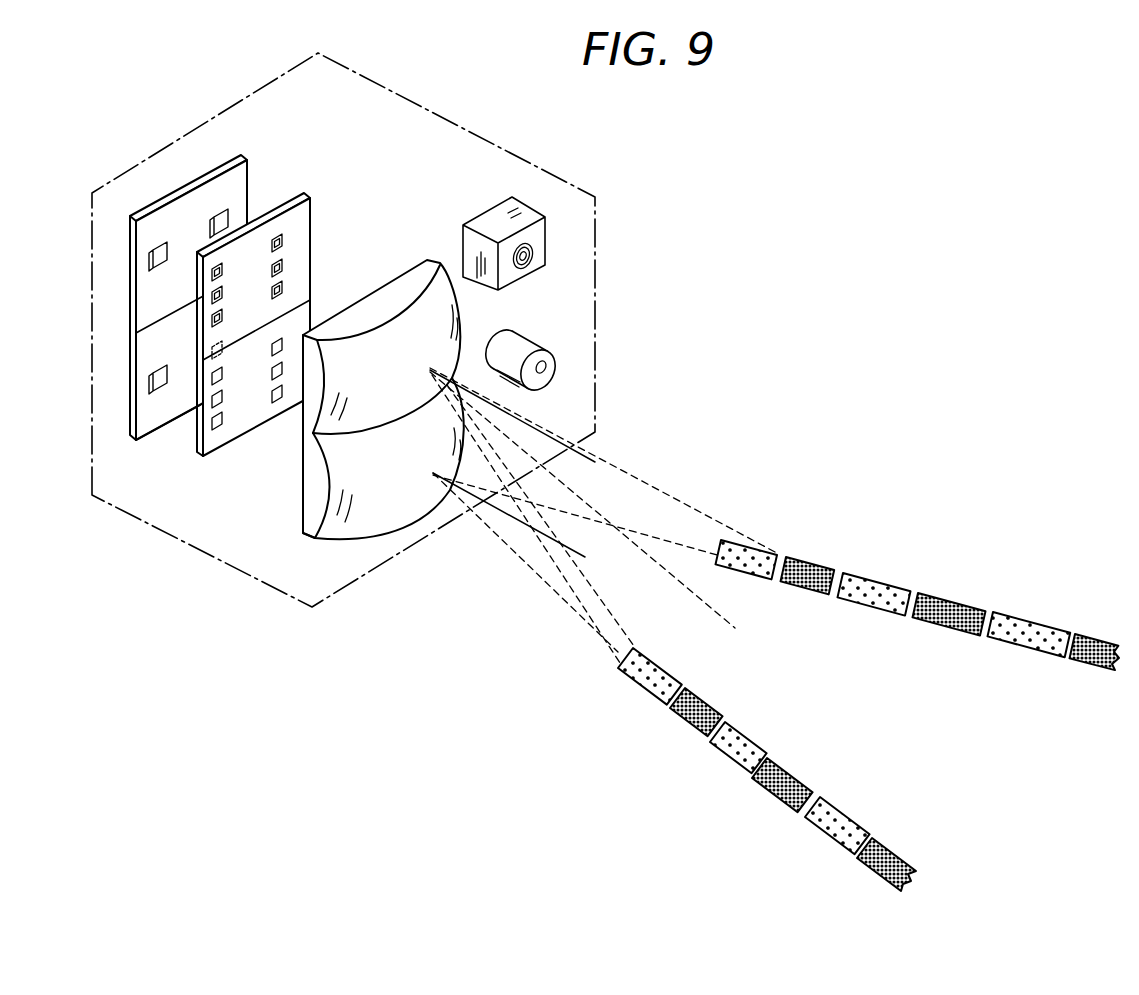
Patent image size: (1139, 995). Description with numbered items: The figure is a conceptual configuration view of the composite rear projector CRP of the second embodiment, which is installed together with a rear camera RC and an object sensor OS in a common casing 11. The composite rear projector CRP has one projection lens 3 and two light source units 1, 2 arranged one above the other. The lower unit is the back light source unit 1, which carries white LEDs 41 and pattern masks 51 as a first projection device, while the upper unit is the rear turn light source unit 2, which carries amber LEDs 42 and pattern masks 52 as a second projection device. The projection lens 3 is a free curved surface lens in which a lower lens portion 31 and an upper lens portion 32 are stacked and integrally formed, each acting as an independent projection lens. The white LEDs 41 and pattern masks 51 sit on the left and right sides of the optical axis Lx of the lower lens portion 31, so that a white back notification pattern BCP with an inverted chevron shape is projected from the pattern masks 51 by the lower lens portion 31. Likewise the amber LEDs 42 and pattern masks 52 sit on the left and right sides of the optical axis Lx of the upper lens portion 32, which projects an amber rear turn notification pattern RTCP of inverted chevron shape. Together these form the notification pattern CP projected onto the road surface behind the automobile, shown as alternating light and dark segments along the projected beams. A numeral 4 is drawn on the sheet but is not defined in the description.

The back light source unit 1 is at (125, 378).
The rear turn light source unit 2 is at (125, 286).
The projection lens 3 is at (383, 418).
The first aperture plate 4 is at (127, 225).
The casing 11 is at (473, 133).
The lower lens portion 31 is at (440, 503).
The upper lens portion 32 is at (409, 322).
The white LEDs 41 is at (220, 365).
The amber LEDs 42 is at (163, 233).
The pattern masks 51 is at (228, 428).
The pattern masks 52 is at (228, 272).
The rear camera RC is at (546, 248).
The object sensor OS is at (557, 362).
The optical axis Lx is at (583, 453).
The composite rear projector CRP is at (222, 500).
The notification pattern CP is at (1013, 528).
The rear turn notification pattern RTCP is at (938, 592).
The back notification pattern BCP is at (1008, 651).